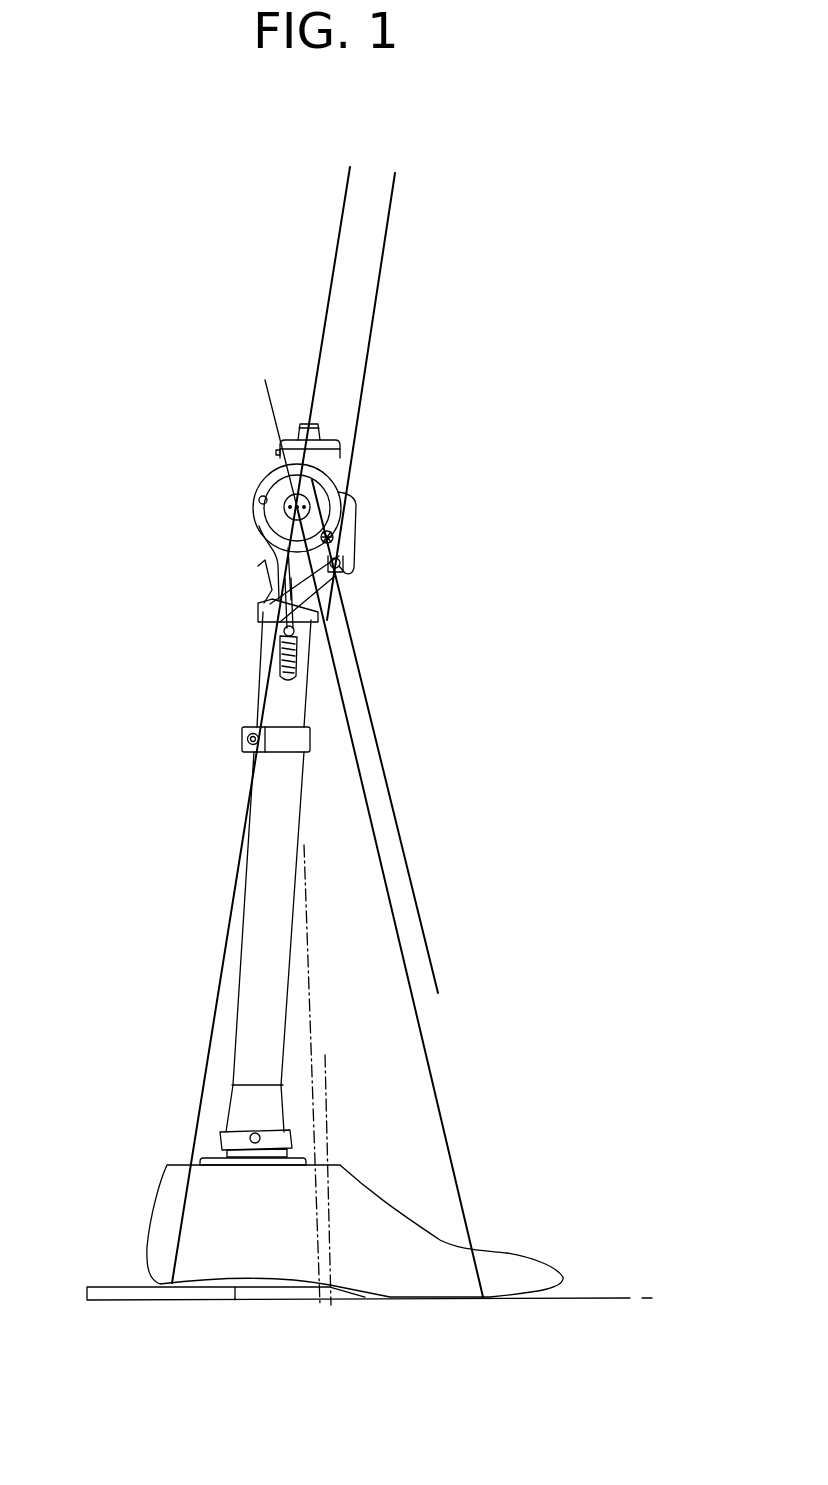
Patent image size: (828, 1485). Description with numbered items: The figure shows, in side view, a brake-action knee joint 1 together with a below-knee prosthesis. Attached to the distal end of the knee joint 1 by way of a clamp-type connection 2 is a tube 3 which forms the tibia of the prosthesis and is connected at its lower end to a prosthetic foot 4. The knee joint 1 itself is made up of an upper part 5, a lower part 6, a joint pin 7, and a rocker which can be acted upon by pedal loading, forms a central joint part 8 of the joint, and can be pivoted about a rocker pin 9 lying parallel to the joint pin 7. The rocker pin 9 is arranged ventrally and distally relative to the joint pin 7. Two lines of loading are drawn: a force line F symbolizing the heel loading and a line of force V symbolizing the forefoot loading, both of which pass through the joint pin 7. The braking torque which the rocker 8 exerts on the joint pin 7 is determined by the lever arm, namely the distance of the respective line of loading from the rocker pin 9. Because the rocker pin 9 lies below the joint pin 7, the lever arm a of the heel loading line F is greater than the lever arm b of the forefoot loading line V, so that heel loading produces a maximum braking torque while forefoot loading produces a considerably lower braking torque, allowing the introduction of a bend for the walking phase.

The brake-action knee joint 1 is at (289, 481).
The clamp-type connection 2 is at (243, 735).
The tube 3 is at (252, 992).
The prosthetic foot 4 is at (158, 1242).
The upper part 5 is at (297, 505).
The lower part 6 is at (258, 655).
The joint pin 7 is at (293, 502).
The central joint part (rocker) 8 is at (343, 547).
The rocker pin 9 is at (359, 569).
The force line F is at (330, 289).
The line of force V is at (432, 1075).
The lever arm a is at (440, 247).
The lever arm b is at (470, 927).